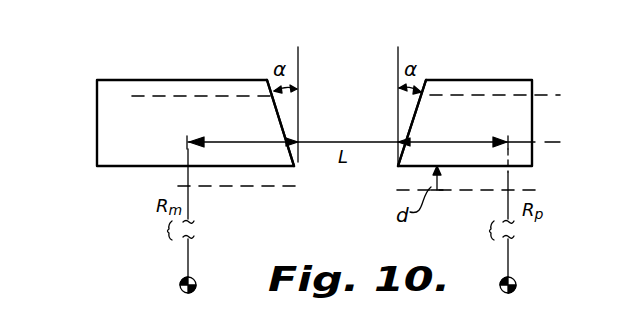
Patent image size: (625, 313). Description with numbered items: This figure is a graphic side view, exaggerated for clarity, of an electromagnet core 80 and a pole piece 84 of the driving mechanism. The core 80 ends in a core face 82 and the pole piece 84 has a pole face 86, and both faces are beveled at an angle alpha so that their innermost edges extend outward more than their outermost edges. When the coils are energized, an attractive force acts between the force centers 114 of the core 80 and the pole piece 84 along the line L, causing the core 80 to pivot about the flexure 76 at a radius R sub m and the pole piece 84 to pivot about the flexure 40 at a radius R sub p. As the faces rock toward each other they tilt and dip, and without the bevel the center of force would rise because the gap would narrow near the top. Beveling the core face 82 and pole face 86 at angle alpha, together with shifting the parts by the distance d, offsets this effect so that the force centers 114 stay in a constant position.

The core 80 is at (136, 80).
The core face 82 is at (283, 121).
The pole piece 84 is at (491, 80).
The pole face 86 is at (408, 112).
The force center 114 is at (186, 143).
The flexure 76 is at (195, 291).
The flexure 40 is at (516, 290).